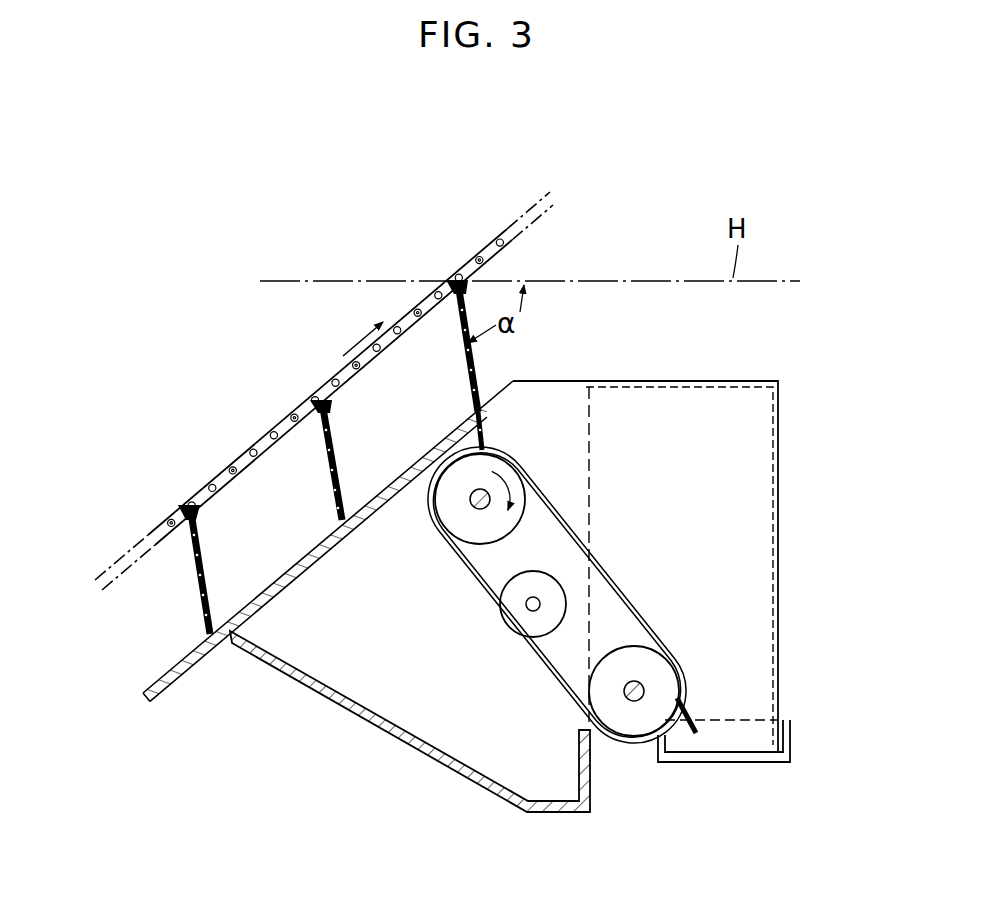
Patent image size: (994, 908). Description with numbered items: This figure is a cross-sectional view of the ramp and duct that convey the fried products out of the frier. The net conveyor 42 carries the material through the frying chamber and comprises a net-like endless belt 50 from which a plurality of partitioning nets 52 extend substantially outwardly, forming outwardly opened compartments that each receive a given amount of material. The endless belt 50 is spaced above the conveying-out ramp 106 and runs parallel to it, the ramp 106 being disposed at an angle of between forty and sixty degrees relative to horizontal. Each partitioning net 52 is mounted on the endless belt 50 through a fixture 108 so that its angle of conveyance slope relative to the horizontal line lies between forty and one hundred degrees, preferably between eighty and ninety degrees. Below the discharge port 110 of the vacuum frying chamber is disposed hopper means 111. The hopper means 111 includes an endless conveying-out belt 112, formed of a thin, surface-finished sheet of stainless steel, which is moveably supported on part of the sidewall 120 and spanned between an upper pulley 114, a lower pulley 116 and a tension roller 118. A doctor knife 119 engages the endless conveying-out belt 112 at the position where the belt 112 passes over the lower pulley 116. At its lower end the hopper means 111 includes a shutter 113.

The net conveyor 42 is at (200, 455).
The endless belt 50 is at (263, 437).
The partitioning net 52 is at (200, 603).
The conveying-out ramp 106 is at (305, 572).
The fixture 108 is at (185, 510).
The discharge port 110 is at (575, 381).
The hopper means 111 is at (788, 540).
The endless conveying-out belt 112 is at (604, 592).
The shutter 113 is at (783, 763).
The upper pulley 114 is at (455, 522).
The lower pulley 116 is at (630, 723).
The tension roller 118 is at (513, 618).
The doctor knife 119 is at (688, 723).
The sidewall 120 is at (484, 424).